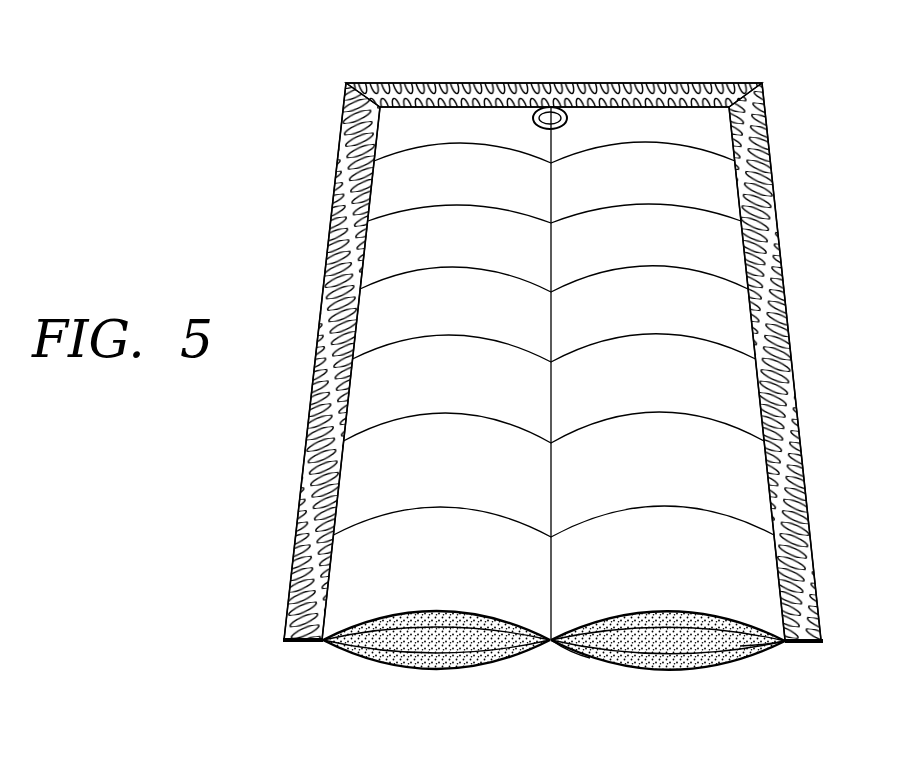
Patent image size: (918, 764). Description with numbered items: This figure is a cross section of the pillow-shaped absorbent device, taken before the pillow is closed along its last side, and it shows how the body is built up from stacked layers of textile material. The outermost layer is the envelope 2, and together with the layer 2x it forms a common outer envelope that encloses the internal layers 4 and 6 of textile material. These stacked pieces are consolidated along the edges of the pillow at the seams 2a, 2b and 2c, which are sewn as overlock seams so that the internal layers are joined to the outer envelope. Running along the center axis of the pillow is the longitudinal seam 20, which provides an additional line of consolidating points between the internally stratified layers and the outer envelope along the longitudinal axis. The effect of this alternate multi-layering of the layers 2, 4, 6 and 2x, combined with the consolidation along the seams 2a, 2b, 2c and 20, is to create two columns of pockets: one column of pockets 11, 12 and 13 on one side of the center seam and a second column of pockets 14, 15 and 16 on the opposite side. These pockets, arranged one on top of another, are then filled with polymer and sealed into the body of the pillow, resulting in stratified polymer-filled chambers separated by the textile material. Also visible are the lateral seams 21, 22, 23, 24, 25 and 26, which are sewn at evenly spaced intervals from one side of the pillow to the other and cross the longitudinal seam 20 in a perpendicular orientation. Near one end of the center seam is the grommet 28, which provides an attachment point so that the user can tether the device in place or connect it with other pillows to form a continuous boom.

The envelope 2 is at (561, 334).
The side seam 2a is at (334, 207).
The side seam 2b is at (505, 83).
The side seam 2c is at (777, 204).
The textile material layer 2x is at (583, 651).
The textile material layer 4 is at (757, 647).
The textile material layer 6 is at (737, 662).
The pocket 11 is at (378, 634).
The pocket 12 is at (407, 645).
The pocket 13 is at (445, 672).
The pocket 14 is at (690, 623).
The pocket 15 is at (676, 646).
The pocket 16 is at (625, 664).
The longitudinal seam 20 is at (547, 645).
The lateral seam 21 is at (420, 148).
The lateral seam 22 is at (417, 210).
The lateral seam 23 is at (410, 272).
The lateral seam 24 is at (405, 340).
The lateral seam 25 is at (397, 420).
The lateral seam 26 is at (385, 515).
The grommet 28 is at (569, 119).